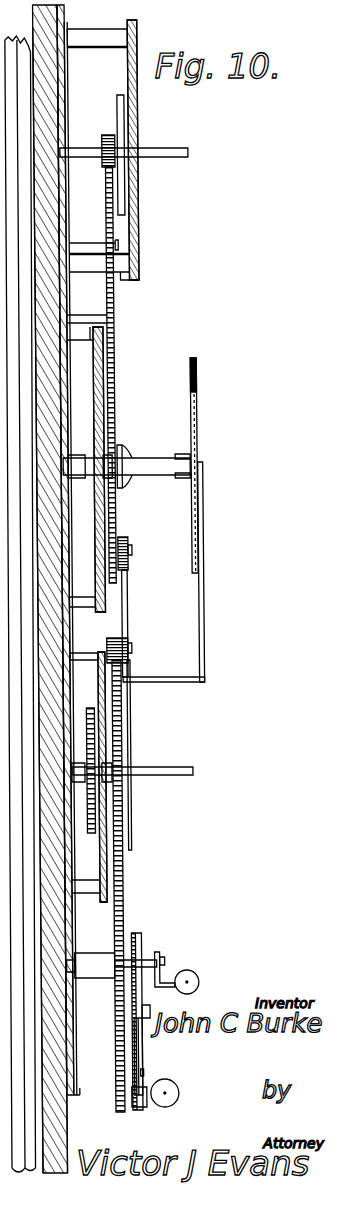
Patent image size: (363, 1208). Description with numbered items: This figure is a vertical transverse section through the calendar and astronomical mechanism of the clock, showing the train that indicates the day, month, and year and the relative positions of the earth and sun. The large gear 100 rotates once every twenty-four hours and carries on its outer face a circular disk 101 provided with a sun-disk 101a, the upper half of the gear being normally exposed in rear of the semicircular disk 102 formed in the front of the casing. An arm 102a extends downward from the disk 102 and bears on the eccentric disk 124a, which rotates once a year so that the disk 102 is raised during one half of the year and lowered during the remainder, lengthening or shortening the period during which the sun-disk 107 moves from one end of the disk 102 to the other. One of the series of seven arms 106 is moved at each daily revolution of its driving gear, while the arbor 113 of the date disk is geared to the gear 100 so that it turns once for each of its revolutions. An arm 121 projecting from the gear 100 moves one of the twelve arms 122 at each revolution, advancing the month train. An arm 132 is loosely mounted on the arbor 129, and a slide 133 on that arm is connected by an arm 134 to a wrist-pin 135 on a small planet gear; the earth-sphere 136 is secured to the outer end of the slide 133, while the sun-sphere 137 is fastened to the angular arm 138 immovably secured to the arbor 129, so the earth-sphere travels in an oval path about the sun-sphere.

The large gear 100 is at (114, 503).
The circular disk 101 is at (194, 430).
The sun-disk 101a is at (194, 389).
The semicircular disk 102 is at (199, 519).
The arm 102a is at (205, 626).
The arms 106 is at (121, 121).
The sun-disk 107 is at (112, 169).
The arbor 113 is at (151, 462).
The arm 121 is at (125, 593).
The arms 122 is at (122, 630).
The disk 124a is at (122, 740).
The arbor 129 is at (119, 934).
The arm 132 is at (121, 1066).
The slide 133 is at (160, 1108).
The arm 134 is at (133, 1072).
The wrist-pin 135 is at (141, 1015).
The earth-sphere 136 is at (169, 1095).
The sun-sphere 137 is at (180, 978).
The angular arm 138 is at (147, 952).